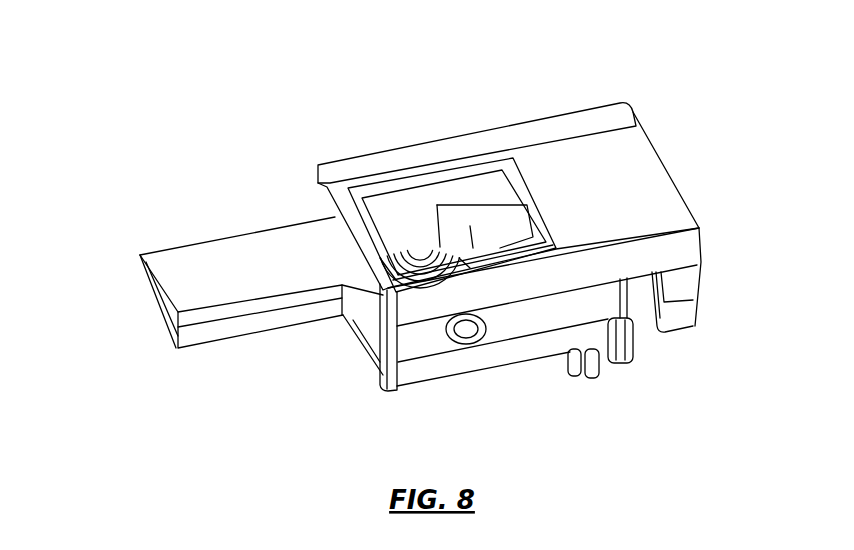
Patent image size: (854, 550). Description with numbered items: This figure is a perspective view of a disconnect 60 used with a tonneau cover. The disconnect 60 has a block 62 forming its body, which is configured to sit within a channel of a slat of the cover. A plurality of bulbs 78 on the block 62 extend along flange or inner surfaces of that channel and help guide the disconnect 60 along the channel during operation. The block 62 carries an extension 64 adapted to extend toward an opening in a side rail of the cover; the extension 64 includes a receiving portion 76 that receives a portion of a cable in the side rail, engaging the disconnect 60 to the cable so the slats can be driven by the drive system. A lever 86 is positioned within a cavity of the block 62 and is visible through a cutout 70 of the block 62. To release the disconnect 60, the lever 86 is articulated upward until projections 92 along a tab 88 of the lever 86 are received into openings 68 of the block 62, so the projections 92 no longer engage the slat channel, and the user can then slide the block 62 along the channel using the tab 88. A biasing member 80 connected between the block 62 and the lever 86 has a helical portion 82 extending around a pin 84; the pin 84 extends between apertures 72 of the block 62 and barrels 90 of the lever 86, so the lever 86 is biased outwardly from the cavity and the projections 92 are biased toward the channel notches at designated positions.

The disconnect 60 is at (455, 64).
The block 62 is at (628, 177).
The extension 64 is at (185, 265).
The openings 68 is at (628, 258).
The cutout 70 is at (492, 176).
The apertures 72 is at (499, 345).
The receiving portion 76 is at (132, 311).
The bulbs 78 is at (613, 118).
The biasing member 80 is at (410, 259).
The helical portion 82 is at (420, 262).
The pin 84 is at (462, 328).
The lever 86 is at (472, 228).
The tab 88 is at (592, 363).
The barrels 90 is at (400, 203).
The projections 92 is at (628, 346).